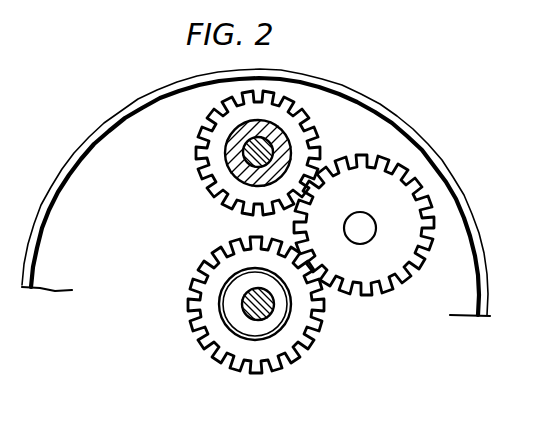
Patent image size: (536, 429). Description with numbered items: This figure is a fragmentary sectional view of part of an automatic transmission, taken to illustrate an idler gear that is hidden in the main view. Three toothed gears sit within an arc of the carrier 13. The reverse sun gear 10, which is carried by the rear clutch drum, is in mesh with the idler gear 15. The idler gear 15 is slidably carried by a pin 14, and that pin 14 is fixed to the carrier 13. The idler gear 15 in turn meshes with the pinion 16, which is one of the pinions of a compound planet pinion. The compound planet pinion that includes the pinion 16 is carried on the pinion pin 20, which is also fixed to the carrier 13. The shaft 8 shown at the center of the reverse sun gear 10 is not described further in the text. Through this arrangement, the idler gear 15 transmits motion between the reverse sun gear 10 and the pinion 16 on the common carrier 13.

The shaft 8 is at (265, 316).
The reverse sun gear 10 is at (318, 330).
The carrier 13 is at (118, 122).
The pin 14 is at (366, 229).
The idler gear 15 is at (378, 283).
The pinion 16 is at (209, 186).
The pinion pin 20 is at (244, 152).